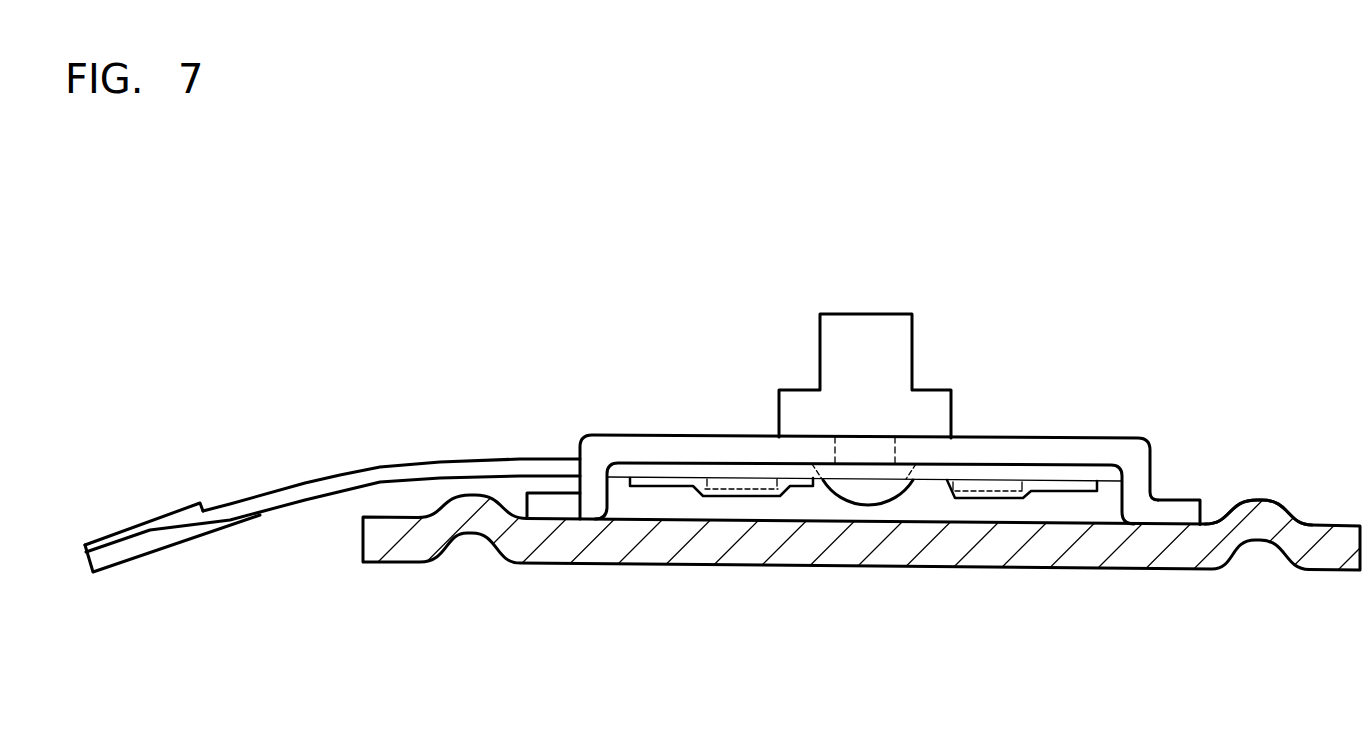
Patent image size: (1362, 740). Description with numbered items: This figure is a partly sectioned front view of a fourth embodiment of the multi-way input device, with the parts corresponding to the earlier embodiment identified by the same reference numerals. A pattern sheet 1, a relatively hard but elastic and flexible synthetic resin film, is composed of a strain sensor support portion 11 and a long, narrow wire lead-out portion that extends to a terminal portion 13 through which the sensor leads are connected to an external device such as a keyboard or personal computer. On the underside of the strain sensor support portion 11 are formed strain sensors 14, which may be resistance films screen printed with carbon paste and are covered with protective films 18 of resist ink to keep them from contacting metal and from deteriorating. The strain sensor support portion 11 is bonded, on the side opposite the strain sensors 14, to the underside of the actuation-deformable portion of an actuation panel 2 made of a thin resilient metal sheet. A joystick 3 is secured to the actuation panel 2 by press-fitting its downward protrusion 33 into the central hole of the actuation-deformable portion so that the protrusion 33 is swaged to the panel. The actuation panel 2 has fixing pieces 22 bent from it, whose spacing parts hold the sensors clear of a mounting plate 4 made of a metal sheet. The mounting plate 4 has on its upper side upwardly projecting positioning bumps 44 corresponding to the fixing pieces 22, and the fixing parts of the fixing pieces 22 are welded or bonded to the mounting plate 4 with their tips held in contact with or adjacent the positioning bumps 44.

The pattern sheet 1 is at (281, 460).
The actuation panel 2 is at (1055, 430).
The joystick 3 is at (890, 310).
The mounting plate 4 is at (860, 572).
The strain sensor support portion 11 is at (680, 468).
The terminal portion 13 is at (138, 525).
The strain sensor 14 is at (970, 507).
The protective film 18 is at (1008, 500).
The fixing piece 22 is at (557, 512).
The downward protrusion 33 is at (853, 490).
The positioning bump 44 is at (1272, 500).